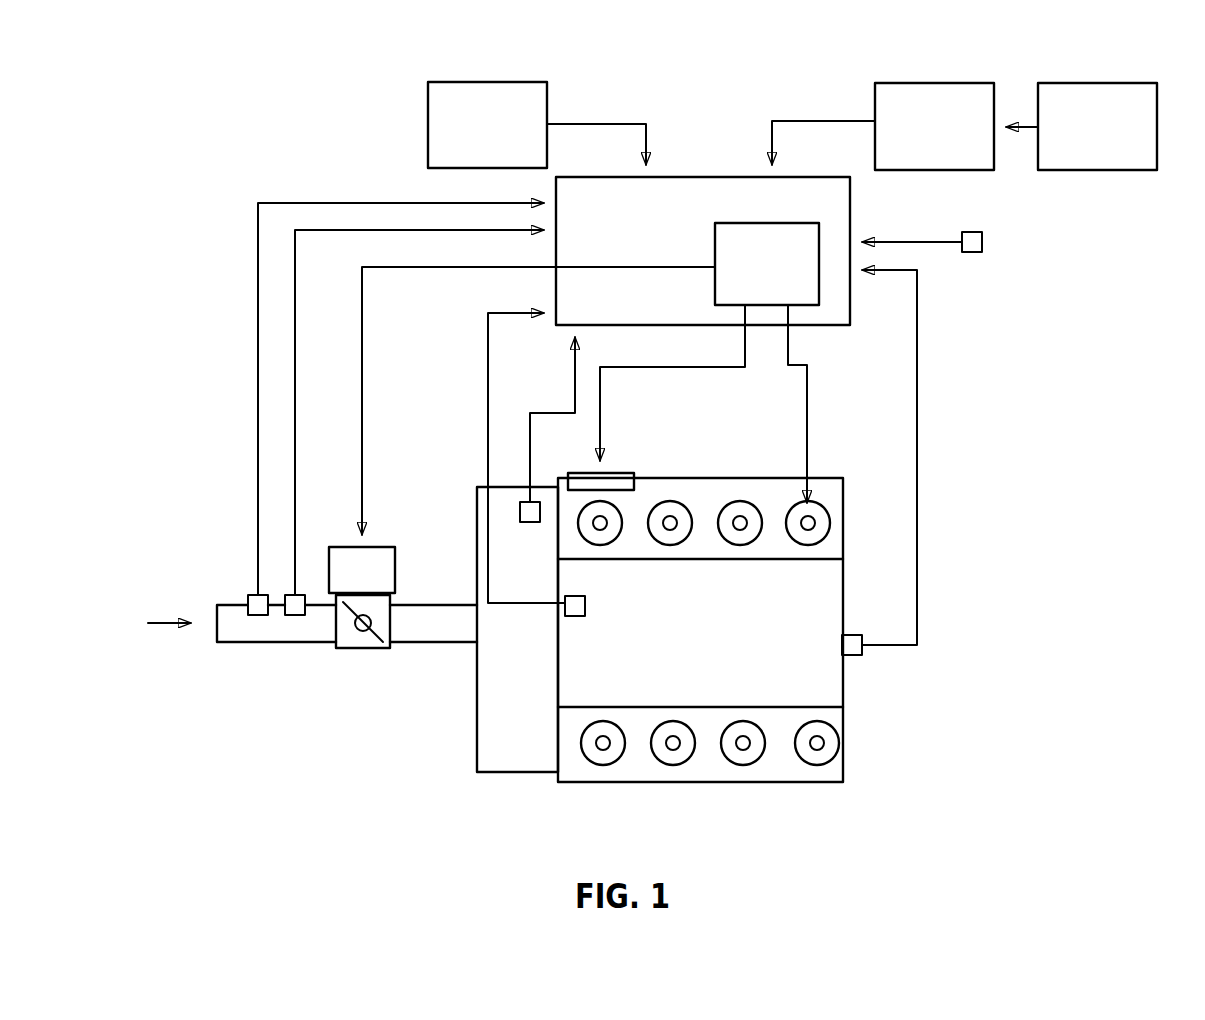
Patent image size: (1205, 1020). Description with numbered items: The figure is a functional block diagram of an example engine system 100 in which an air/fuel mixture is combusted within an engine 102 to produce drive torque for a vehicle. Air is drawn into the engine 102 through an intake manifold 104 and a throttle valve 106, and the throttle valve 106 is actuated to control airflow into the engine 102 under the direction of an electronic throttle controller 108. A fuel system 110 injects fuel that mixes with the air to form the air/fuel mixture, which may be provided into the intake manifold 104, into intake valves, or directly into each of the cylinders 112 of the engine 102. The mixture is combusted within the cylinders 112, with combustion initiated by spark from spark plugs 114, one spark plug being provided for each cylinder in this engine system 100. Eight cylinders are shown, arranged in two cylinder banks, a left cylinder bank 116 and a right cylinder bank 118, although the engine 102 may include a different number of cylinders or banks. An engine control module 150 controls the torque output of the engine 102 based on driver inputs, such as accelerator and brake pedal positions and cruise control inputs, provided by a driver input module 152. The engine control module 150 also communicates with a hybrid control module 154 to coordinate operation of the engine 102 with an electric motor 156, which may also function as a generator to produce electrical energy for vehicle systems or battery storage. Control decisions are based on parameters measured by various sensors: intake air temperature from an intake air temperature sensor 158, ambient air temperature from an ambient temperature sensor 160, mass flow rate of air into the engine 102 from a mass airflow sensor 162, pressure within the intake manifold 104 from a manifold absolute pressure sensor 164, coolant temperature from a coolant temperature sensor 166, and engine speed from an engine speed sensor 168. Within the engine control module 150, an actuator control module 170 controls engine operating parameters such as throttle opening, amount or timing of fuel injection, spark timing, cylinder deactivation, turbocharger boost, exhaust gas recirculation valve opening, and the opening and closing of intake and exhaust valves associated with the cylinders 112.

The engine system 100 is at (188, 158).
The engine 102 is at (720, 434).
The intake manifold 104 is at (518, 772).
The throttle valve 106 is at (360, 648).
The electronic throttle controller 108 is at (376, 547).
The fuel system 110 is at (611, 473).
The cylinders 112 is at (606, 545).
The spark plugs 114 is at (593, 523).
The left cylinder bank 116 is at (634, 542).
The right cylinder bank 118 is at (632, 718).
The engine control module 150 is at (722, 177).
The driver input module 152 is at (487, 82).
The hybrid control module 154 is at (937, 83).
The electric motor 156 is at (1098, 83).
The intake air temperature sensor 158 is at (258, 615).
The ambient temperature sensor 160 is at (972, 232).
The mass airflow sensor 162 is at (295, 615).
The manifold absolute pressure sensor 164 is at (531, 502).
The coolant temperature sensor 166 is at (568, 617).
The engine speed sensor 168 is at (842, 643).
The actuator control module 170 is at (805, 305).